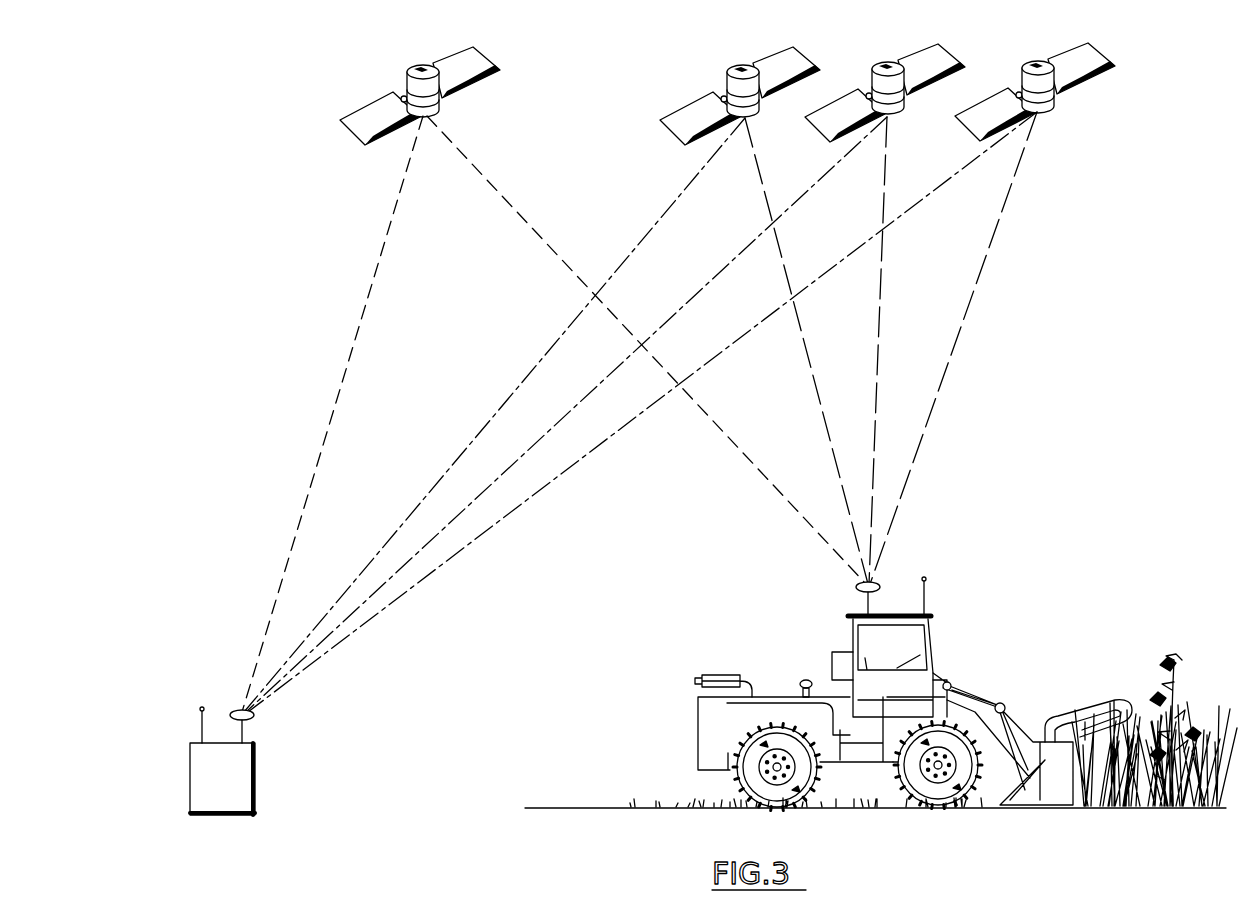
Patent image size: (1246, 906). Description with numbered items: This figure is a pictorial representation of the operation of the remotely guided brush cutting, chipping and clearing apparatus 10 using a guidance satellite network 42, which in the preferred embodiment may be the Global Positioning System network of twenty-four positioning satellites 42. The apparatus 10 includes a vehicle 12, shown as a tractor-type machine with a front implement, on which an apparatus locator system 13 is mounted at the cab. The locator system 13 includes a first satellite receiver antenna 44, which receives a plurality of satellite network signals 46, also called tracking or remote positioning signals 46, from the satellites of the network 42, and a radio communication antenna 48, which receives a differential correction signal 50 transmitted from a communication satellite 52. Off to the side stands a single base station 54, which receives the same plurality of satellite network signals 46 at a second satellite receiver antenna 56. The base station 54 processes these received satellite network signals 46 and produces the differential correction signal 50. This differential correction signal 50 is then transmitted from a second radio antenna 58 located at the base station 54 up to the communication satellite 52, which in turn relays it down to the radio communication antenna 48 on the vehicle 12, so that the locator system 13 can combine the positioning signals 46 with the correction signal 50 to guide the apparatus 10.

The remotely guided brush cutting, chipping and clearing apparatus 10 is at (913, 682).
The vehicle 12 is at (734, 741).
The apparatus locator system 13 is at (913, 609).
The guidance satellite network 42 is at (884, 42).
The first satellite receiver antenna 44 is at (857, 584).
The satellite network signals 46 is at (516, 507).
The radio communication antenna 48 is at (926, 580).
The differential correction signal 50 is at (524, 211).
The communication satellite 52 is at (368, 87).
The base station 54 is at (240, 798).
The second satellite receiver antenna 56 is at (256, 716).
The second radio antenna 58 is at (195, 722).